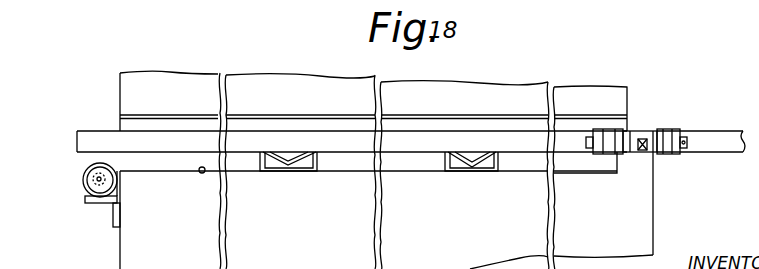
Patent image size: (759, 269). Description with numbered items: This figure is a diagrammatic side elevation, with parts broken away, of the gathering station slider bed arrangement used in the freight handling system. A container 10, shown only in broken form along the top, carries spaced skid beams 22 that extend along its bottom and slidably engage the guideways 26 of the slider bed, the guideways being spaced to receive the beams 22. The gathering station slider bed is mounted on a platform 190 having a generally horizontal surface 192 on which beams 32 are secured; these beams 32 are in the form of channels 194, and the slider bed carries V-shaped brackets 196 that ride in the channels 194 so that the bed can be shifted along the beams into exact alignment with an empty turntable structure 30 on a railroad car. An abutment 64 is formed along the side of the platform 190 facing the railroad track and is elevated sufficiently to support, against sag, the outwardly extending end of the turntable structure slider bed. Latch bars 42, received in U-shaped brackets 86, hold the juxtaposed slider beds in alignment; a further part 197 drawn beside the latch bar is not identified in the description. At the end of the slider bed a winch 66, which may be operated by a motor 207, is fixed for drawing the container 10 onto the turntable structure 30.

The container 10 is at (511, 92).
The skid beams 22 is at (443, 125).
The guideways 26 is at (160, 142).
The turntable structure 30 is at (725, 130).
The beams 32 is at (263, 160).
The latch bars 42 is at (638, 132).
The abutment 64 is at (636, 163).
The winch 66 is at (88, 165).
The U-shaped brackets 86 is at (612, 138).
The platform 190 is at (120, 253).
The generally horizontal surface 192 is at (201, 174).
The channels 194 is at (290, 173).
The V-shaped brackets 196 is at (295, 157).
The pin 197 is at (647, 140).
The motor 207 is at (86, 186).